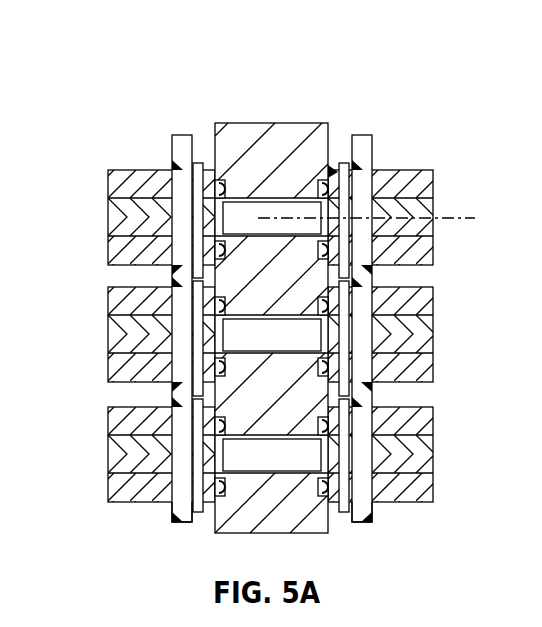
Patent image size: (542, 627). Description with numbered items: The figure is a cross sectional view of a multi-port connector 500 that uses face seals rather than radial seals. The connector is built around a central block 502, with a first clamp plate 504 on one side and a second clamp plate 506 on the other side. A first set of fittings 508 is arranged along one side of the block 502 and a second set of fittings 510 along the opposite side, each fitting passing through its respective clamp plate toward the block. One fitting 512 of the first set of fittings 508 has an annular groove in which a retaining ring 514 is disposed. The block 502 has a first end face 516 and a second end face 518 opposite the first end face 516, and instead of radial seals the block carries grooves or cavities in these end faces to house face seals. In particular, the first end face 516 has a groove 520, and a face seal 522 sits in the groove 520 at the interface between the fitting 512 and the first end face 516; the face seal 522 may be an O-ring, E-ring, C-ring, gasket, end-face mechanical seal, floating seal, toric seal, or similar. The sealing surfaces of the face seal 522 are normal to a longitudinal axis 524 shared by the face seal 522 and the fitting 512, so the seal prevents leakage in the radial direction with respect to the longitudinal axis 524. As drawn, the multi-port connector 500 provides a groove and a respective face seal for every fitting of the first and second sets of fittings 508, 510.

The multi-port connector 500 is at (275, 298).
The block 502 is at (254, 287).
The first clamp plate 504 is at (366, 334).
The second clamp plate 506 is at (175, 339).
The first set of fittings 508 is at (417, 305).
The second set of fittings 510 is at (130, 165).
The fitting 512 is at (434, 180).
The retaining ring 514 is at (346, 174).
The first end face 516 is at (344, 523).
The second end face 518 is at (198, 523).
The groove 520 is at (322, 178).
The face seal 522 is at (320, 172).
The longitudinal axis 524 is at (465, 222).